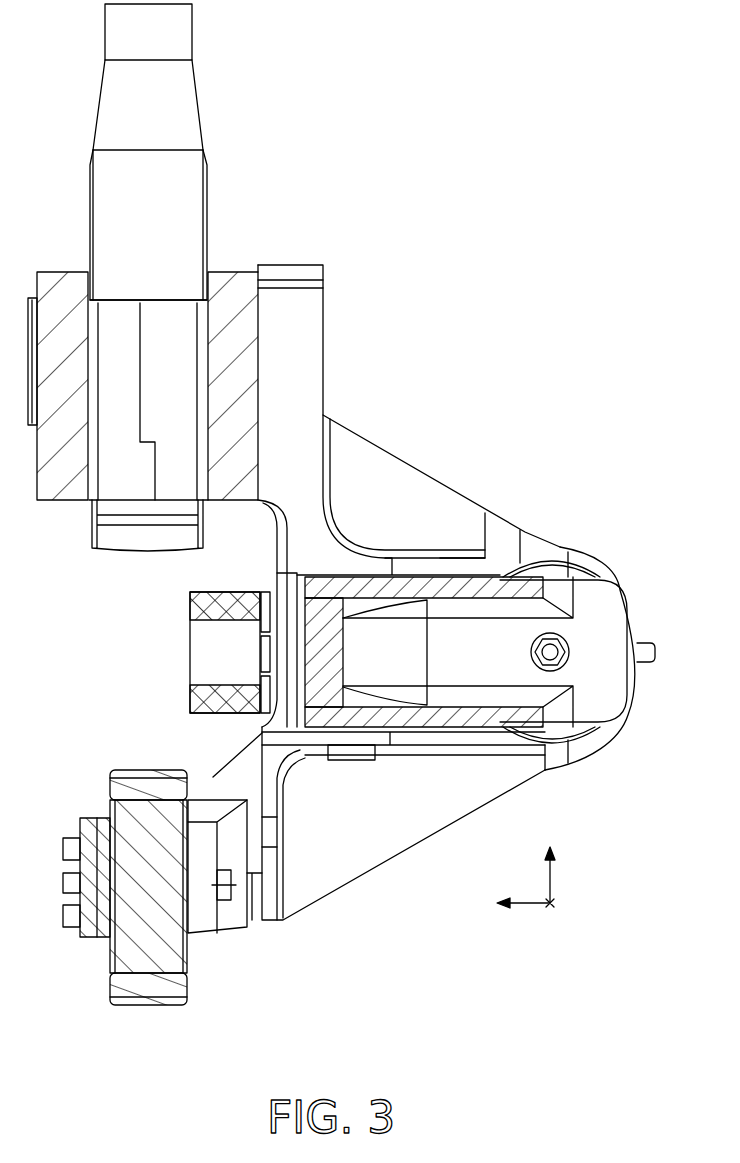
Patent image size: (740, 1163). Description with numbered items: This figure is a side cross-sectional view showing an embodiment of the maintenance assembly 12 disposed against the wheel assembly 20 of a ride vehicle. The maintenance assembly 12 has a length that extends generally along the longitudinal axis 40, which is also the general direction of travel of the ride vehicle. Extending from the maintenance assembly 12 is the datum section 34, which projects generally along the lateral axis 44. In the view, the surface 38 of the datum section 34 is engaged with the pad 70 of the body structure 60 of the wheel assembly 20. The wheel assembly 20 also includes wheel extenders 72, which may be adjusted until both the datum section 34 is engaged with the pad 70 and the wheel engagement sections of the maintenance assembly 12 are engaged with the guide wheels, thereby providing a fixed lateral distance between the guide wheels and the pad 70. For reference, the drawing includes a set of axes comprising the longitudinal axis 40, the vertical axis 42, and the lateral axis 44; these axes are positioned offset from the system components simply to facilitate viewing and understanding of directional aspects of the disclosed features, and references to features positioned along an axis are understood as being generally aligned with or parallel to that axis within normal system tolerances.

The wheel assembly 20 is at (548, 320).
The maintenance assembly 12 is at (160, 688).
The datum section 34 is at (264, 586).
The surface 38 is at (277, 594).
The body structure 60 is at (589, 524).
The pad 70 is at (315, 640).
The wheel extender 72 is at (630, 606).
The longitudinal axis 40 is at (555, 903).
The vertical axis 42 is at (552, 882).
The lateral axis 44 is at (528, 906).